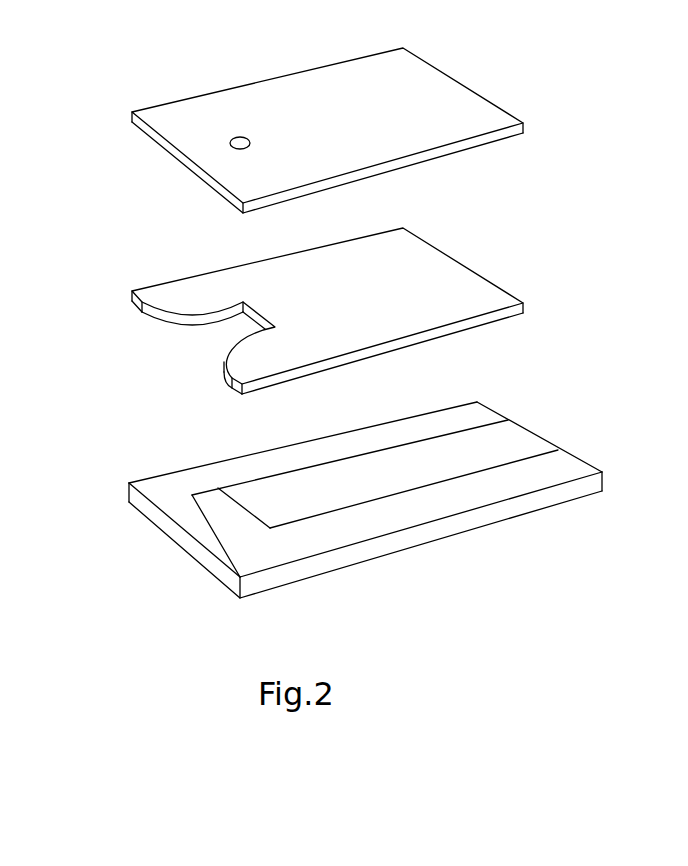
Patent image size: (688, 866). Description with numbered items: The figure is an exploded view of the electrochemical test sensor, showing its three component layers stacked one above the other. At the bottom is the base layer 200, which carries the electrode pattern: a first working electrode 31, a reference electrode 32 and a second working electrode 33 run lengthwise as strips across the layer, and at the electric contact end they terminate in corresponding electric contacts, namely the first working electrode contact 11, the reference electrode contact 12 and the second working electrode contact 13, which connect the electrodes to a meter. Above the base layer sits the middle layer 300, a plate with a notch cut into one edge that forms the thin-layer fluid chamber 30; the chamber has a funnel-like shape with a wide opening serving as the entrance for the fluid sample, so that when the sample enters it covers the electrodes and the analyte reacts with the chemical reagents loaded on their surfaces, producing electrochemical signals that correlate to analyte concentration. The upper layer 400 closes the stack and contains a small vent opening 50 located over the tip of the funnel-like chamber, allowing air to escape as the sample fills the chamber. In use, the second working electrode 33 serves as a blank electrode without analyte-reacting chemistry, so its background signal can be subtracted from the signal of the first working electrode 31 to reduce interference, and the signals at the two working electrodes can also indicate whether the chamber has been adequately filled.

The upper layer 400 is at (280, 130).
The vent opening 50 is at (241, 136).
The middle layer 300 is at (280, 311).
The thin-layer fluid chamber 30 is at (210, 340).
The base layer 200 is at (319, 500).
The second working electrode contact 13 is at (329, 432).
The reference electrode contact 12 is at (381, 450).
The first working electrode contact 11 is at (441, 480).
The second working electrode 33 is at (227, 553).
The reference electrode 32 is at (350, 498).
The first working electrode 31 is at (297, 543).